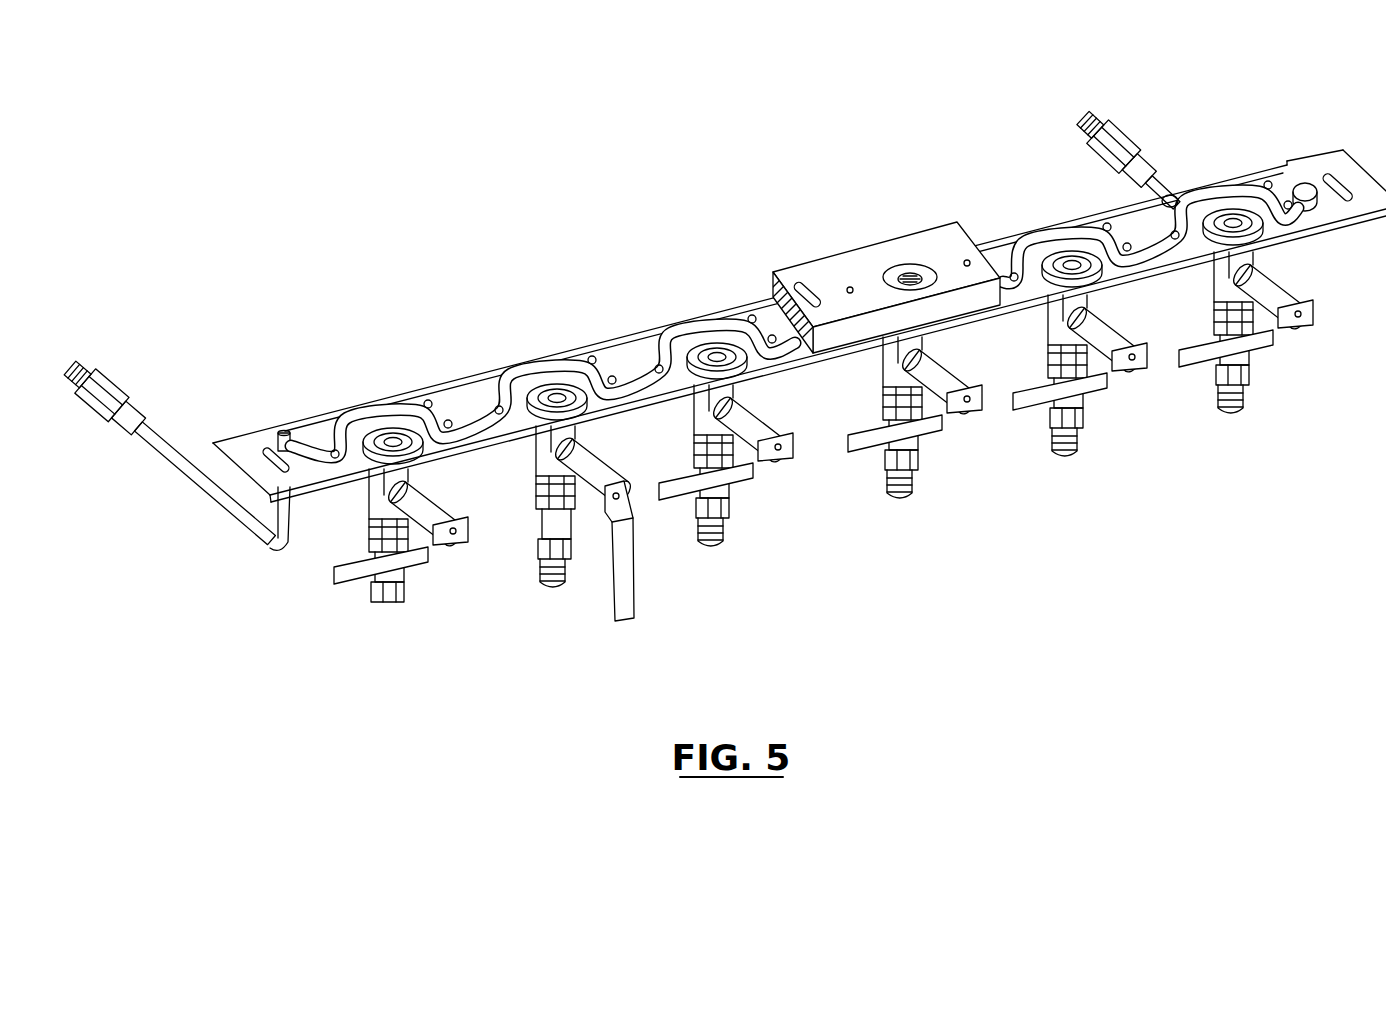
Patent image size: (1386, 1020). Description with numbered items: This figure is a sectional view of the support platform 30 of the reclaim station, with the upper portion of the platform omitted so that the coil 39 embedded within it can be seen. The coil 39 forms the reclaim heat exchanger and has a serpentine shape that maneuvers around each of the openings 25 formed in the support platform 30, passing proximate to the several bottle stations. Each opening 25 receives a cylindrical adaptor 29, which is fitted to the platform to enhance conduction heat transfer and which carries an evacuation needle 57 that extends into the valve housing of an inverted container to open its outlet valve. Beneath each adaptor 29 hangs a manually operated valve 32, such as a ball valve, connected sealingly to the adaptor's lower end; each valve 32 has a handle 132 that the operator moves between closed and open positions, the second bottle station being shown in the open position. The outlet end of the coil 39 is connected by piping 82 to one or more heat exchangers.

The opening 25 is at (929, 258).
The cylindrical adaptor 29 is at (716, 346).
The support platform 30 is at (843, 260).
The valve 32 is at (370, 503).
The coil 39 is at (645, 378).
The evacuation needle 57 is at (906, 276).
The piping 82 is at (161, 440).
The handle 132 is at (362, 573).